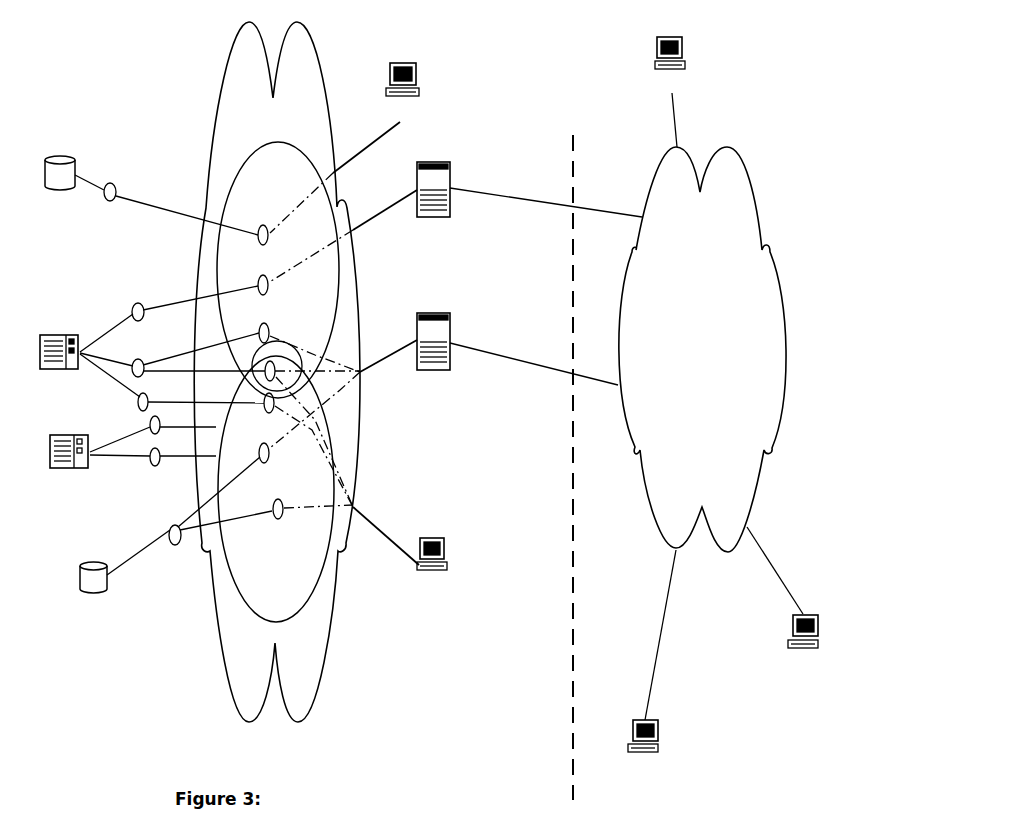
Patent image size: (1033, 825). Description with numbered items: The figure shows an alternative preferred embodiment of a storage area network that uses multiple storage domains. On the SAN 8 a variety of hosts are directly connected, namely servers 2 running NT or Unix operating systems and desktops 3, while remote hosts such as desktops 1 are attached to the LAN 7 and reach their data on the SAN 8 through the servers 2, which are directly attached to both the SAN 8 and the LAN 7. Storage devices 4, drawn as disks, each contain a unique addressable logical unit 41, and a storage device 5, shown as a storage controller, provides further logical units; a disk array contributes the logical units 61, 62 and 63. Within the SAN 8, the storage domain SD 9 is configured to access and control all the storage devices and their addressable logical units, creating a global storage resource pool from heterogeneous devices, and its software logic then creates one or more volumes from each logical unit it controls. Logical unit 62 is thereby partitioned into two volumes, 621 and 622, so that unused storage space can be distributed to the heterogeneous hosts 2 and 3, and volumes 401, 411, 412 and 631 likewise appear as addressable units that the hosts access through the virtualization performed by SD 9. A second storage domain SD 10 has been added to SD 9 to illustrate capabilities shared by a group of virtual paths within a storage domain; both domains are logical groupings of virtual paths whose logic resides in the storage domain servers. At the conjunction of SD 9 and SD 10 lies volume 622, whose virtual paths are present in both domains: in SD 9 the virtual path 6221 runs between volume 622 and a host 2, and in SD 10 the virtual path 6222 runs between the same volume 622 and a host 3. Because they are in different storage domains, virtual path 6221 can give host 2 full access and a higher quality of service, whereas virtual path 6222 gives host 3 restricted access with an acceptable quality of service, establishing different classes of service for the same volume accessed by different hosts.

The remote host desktop 1 is at (672, 37).
The server host 2 is at (431, 162).
The desktop host 3 is at (405, 63).
The storage device 4 is at (60, 157).
The storage device 5 is at (72, 435).
The LAN 7 is at (702, 349).
The SAN 8 is at (68, 335).
The storage domain SD 9 is at (278, 270).
The storage domain SD 10 is at (276, 489).
The addressable logical unit 41 is at (110, 183).
The logical unit 61 is at (138, 303).
The logical unit 62 is at (138, 359).
The logical unit 63 is at (146, 395).
The volume 401 is at (295, 211).
The SAN port for disk 411 is at (309, 418).
The SAN port for disk 412 is at (310, 520).
The volume 621 is at (276, 323).
The volume 622 is at (306, 366).
The SAN port for disk array 631 is at (299, 450).
The virtual path VP 6221 is at (332, 365).
The virtual path VP 6222 is at (343, 460).